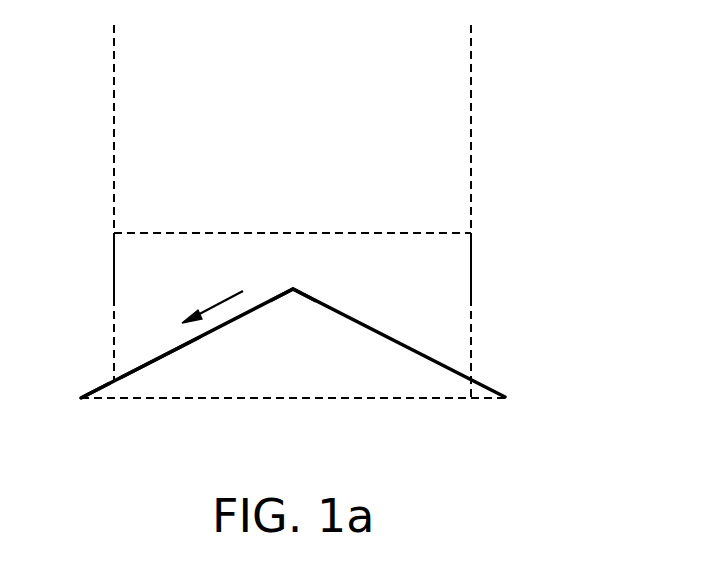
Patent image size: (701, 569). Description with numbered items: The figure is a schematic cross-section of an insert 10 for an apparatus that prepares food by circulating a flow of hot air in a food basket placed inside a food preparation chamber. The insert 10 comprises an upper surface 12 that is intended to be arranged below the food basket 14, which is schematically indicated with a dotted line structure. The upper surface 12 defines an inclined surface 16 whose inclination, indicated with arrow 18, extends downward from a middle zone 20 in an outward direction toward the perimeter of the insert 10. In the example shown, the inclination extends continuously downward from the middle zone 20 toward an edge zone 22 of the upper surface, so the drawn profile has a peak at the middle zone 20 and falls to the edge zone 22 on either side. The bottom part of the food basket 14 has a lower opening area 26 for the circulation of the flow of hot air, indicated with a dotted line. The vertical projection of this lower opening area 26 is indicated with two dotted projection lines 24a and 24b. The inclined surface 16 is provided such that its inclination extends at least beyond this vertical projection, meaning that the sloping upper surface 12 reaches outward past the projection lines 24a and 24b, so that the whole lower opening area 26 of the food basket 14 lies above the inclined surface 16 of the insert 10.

The insert 10 is at (567, 229).
The upper surface 12 is at (387, 334).
The food basket 14 is at (471, 120).
The inclined surface 16 is at (151, 360).
The arrow 18 is at (217, 301).
The middle zone 20 is at (293, 289).
The edge zone 22 is at (96, 390).
The projection line 24a is at (114, 268).
The projection line 24b is at (471, 268).
The lower opening area 26 is at (173, 232).